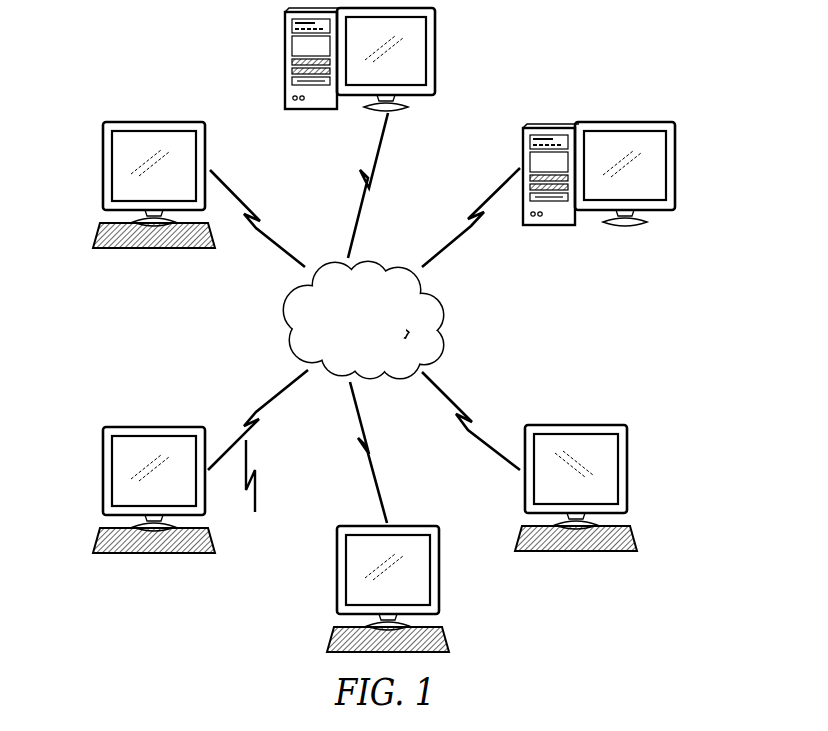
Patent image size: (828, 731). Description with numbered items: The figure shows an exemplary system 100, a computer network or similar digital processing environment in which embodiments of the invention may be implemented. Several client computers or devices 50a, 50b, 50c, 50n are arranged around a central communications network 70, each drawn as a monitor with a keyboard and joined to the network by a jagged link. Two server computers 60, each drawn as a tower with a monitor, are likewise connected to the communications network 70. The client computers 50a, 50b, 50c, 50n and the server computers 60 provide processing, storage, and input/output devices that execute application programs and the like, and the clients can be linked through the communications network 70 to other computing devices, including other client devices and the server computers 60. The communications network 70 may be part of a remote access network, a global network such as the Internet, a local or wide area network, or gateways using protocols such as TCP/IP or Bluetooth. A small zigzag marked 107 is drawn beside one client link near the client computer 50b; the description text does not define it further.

The system 100 is at (243, 63).
The server computer 60 is at (437, 50).
The client computer/device 50a is at (101, 168).
The client computer/device 50b is at (101, 470).
The client computer/device 50c is at (436, 568).
The client computer/device 50n is at (627, 468).
The communications network 70 is at (376, 345).
The wireless communication link 107 is at (258, 487).